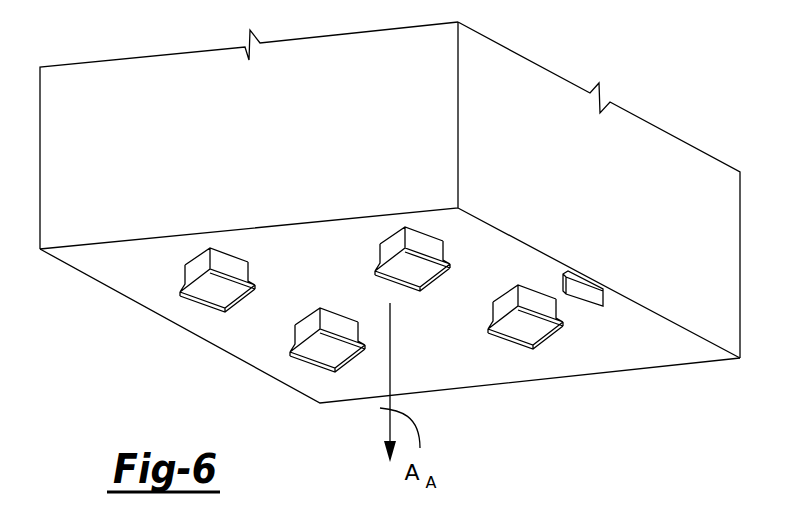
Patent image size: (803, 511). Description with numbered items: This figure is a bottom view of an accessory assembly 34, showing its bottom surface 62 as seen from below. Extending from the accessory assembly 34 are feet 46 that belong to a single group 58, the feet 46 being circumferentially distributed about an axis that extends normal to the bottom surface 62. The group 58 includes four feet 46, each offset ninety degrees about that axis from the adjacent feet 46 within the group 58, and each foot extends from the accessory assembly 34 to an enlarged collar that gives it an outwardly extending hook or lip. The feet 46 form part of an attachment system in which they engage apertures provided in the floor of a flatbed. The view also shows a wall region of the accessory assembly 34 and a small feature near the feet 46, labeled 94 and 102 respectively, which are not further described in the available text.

The side wall panel 94 is at (230, 151).
The accessory assembly 34 is at (672, 167).
The bottom surface 62 is at (678, 347).
The feet 46 is at (220, 295).
The sensor 102 is at (593, 297).
The group of feet 58 is at (473, 435).